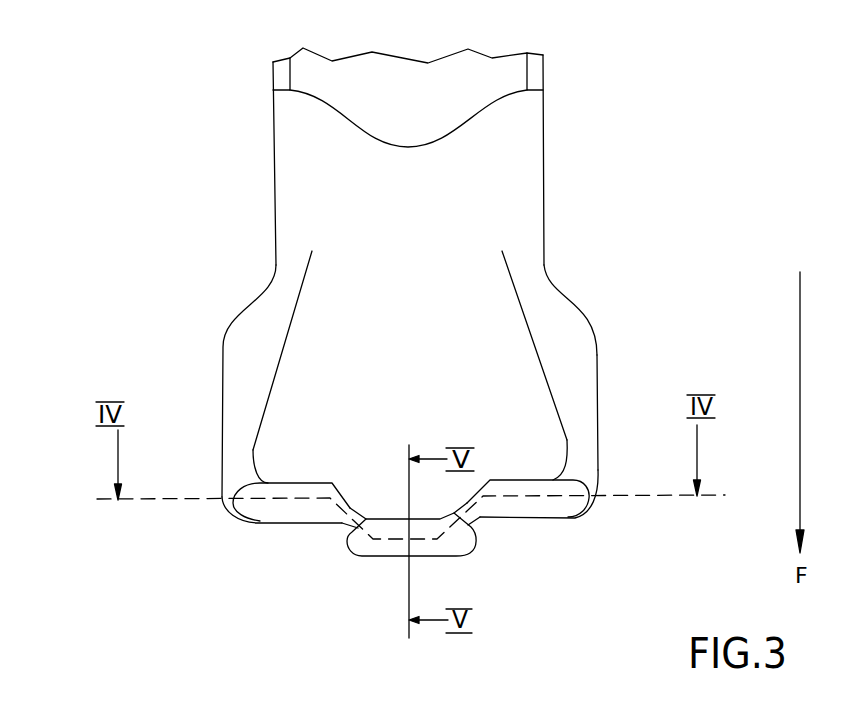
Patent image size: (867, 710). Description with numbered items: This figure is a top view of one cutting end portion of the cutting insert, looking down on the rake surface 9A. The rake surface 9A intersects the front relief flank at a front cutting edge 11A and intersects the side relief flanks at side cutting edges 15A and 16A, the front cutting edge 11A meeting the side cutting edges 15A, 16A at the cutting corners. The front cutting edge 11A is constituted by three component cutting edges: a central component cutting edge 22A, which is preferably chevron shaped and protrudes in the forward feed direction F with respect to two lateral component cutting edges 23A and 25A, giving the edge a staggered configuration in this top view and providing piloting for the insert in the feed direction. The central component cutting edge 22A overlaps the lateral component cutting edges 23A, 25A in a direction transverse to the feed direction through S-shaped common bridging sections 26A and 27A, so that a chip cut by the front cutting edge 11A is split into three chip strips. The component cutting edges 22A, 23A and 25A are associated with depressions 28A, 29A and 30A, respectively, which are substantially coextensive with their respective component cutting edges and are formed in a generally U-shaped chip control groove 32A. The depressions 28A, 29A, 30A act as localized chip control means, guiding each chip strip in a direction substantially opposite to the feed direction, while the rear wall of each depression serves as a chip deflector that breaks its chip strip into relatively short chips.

The rake surface 9A is at (422, 291).
The front cutting edge 11A is at (485, 626).
The side cutting edge 15A is at (222, 402).
The side cutting edge 16A is at (595, 387).
The central component cutting edge 22A is at (385, 557).
The lateral component cutting edge 23A is at (277, 525).
The lateral component cutting edge 25A is at (540, 520).
The S-shaped common bridging section 26A is at (343, 528).
The S-shaped common bridging section 27A is at (478, 530).
The depression 28A is at (392, 525).
The depression 29A is at (310, 490).
The depression 30A is at (525, 488).
The chip control groove 32A is at (560, 343).